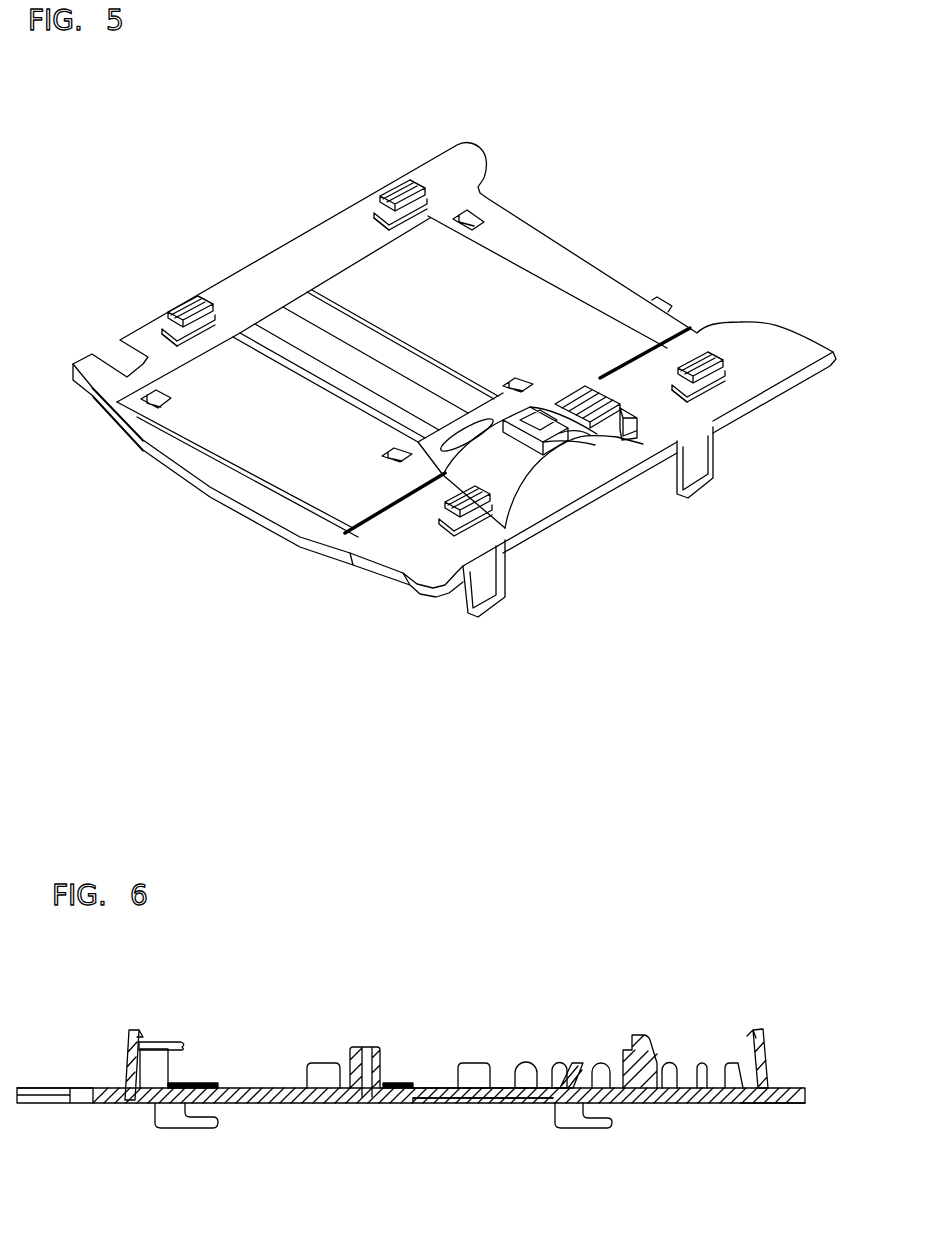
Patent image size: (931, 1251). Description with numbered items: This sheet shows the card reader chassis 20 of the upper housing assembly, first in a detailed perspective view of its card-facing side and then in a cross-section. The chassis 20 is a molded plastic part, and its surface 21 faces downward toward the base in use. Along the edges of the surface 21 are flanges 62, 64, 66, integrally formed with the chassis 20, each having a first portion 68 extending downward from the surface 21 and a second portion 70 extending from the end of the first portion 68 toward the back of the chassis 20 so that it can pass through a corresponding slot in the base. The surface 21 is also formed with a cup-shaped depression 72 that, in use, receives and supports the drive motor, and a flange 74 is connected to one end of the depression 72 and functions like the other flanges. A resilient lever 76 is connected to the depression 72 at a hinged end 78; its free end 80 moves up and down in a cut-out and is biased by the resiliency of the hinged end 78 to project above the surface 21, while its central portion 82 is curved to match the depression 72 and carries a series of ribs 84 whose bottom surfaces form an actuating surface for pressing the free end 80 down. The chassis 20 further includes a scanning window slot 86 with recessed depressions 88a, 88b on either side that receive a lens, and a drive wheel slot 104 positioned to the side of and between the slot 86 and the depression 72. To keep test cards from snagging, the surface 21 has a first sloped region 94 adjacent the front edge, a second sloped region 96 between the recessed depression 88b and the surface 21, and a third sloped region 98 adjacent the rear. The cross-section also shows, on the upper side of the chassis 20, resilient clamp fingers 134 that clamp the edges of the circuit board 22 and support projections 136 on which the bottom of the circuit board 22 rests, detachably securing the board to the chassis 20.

In FIG. 5, the chassis 20 is at (322, 190).
In FIG. 5, the surface 21 is at (276, 270).
In FIG. 6, the circuit board 22 is at (163, 1040).
In FIG. 5, the flange 62 is at (710, 375).
In FIG. 5, the flange 64 is at (381, 190).
In FIG. 6, the flange 64 is at (164, 1143).
In FIG. 5, the flange 66 is at (178, 308).
In FIG. 6, the flange 66 is at (580, 1145).
In FIG. 5, the first portion 68 is at (422, 197).
In FIG. 5, the second portion 70 is at (398, 208).
In FIG. 5, the cup-shaped depression 72 is at (575, 488).
In FIG. 5, the flange 74 is at (480, 507).
In FIG. 5, the resilient lever 76 is at (595, 440).
In FIG. 5, the hinged end 78 is at (522, 435).
In FIG. 5, the free end 80 is at (633, 418).
In FIG. 5, the central portion 82 is at (540, 402).
In FIG. 5, the ribs 84 is at (600, 394).
In FIG. 5, the slot 86 is at (400, 387).
In FIG. 6, the slot 86 is at (497, 1088).
In FIG. 5, the recessed depression 88a is at (350, 332).
In FIG. 6, the recessed depression 88a is at (433, 1099).
In FIG. 5, the recessed depression 88b is at (337, 383).
In FIG. 6, the recessed depression 88b is at (535, 1099).
In FIG. 5, the first sloped region 94 is at (543, 258).
In FIG. 6, the first sloped region 94 is at (127, 1100).
In FIG. 5, the second sloped region 96 is at (272, 362).
In FIG. 6, the second sloped region 96 is at (562, 1108).
In FIG. 5, the third sloped region 98 is at (290, 497).
In FIG. 6, the third sloped region 98 is at (766, 1105).
In FIG. 5, the drive wheel slot 104 is at (418, 475).
In FIG. 6, the resilient clamp fingers 134 is at (127, 1058).
In FIG. 6, the support projections 136 is at (163, 1068).